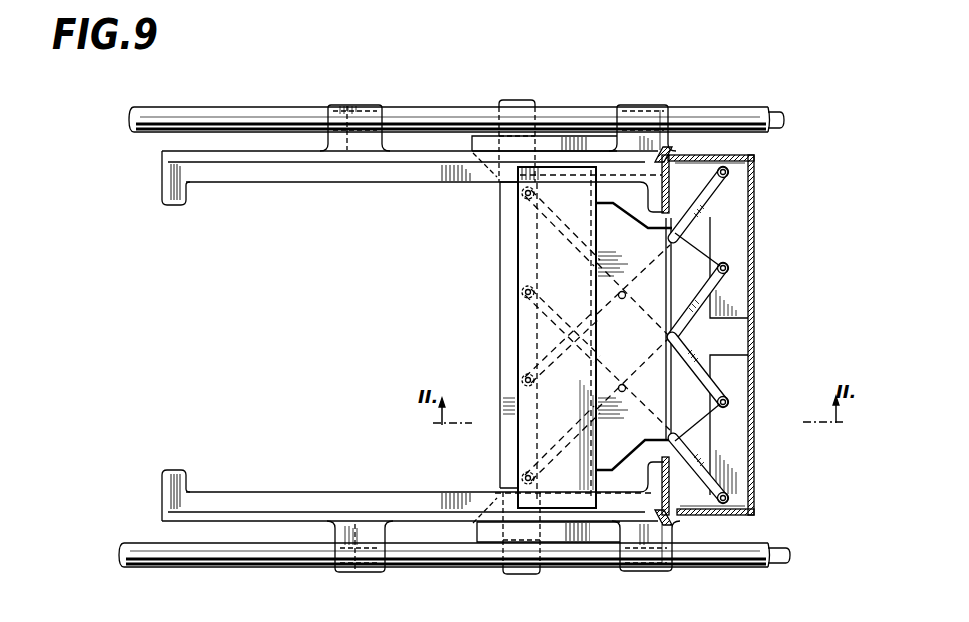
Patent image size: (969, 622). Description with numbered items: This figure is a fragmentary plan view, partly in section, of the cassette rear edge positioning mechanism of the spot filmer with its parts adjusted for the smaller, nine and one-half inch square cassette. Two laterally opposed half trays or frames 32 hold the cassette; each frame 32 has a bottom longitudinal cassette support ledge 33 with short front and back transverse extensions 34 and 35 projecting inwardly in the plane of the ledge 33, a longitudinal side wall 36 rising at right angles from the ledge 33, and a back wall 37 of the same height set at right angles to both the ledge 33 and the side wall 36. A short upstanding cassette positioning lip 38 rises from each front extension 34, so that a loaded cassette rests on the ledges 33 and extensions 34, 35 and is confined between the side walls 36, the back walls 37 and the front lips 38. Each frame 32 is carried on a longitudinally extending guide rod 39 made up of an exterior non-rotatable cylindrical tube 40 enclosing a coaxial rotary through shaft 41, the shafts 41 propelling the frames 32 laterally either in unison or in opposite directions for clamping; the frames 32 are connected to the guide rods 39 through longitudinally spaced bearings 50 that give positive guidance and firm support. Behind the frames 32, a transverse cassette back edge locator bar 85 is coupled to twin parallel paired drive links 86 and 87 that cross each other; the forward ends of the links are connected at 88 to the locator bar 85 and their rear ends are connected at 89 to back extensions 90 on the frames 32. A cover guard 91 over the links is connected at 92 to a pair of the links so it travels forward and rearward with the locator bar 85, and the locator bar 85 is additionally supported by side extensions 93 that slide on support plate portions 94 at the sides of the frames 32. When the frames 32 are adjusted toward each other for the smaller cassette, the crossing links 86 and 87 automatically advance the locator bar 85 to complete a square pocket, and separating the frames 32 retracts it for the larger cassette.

The half tray 32 is at (431, 182).
The bottom longitudinal cassette support ledge 33 is at (297, 166).
The front transverse extension 34 is at (177, 206).
The back transverse extension 35 is at (652, 200).
The longitudinal side wall 36 is at (258, 164).
The back wall 37 is at (674, 170).
The cassette positioning lip 38 is at (163, 185).
The guide rod 39 is at (271, 108).
The cylindrical tube 40 is at (713, 107).
The rotary through shaft 41 is at (781, 111).
The bearing 50 is at (355, 102).
The cassette back edge locator bar 85 is at (505, 250).
The drive link 86 is at (708, 258).
The drive link 87 is at (695, 456).
The forward link connection 88 is at (522, 195).
The rear link connection 89 is at (729, 172).
The back extension 90 is at (753, 245).
The cover guard 91 is at (613, 222).
The cover guard connection 92 is at (620, 384).
The side extension 93 is at (517, 99).
The support plate portion 94 is at (565, 137).